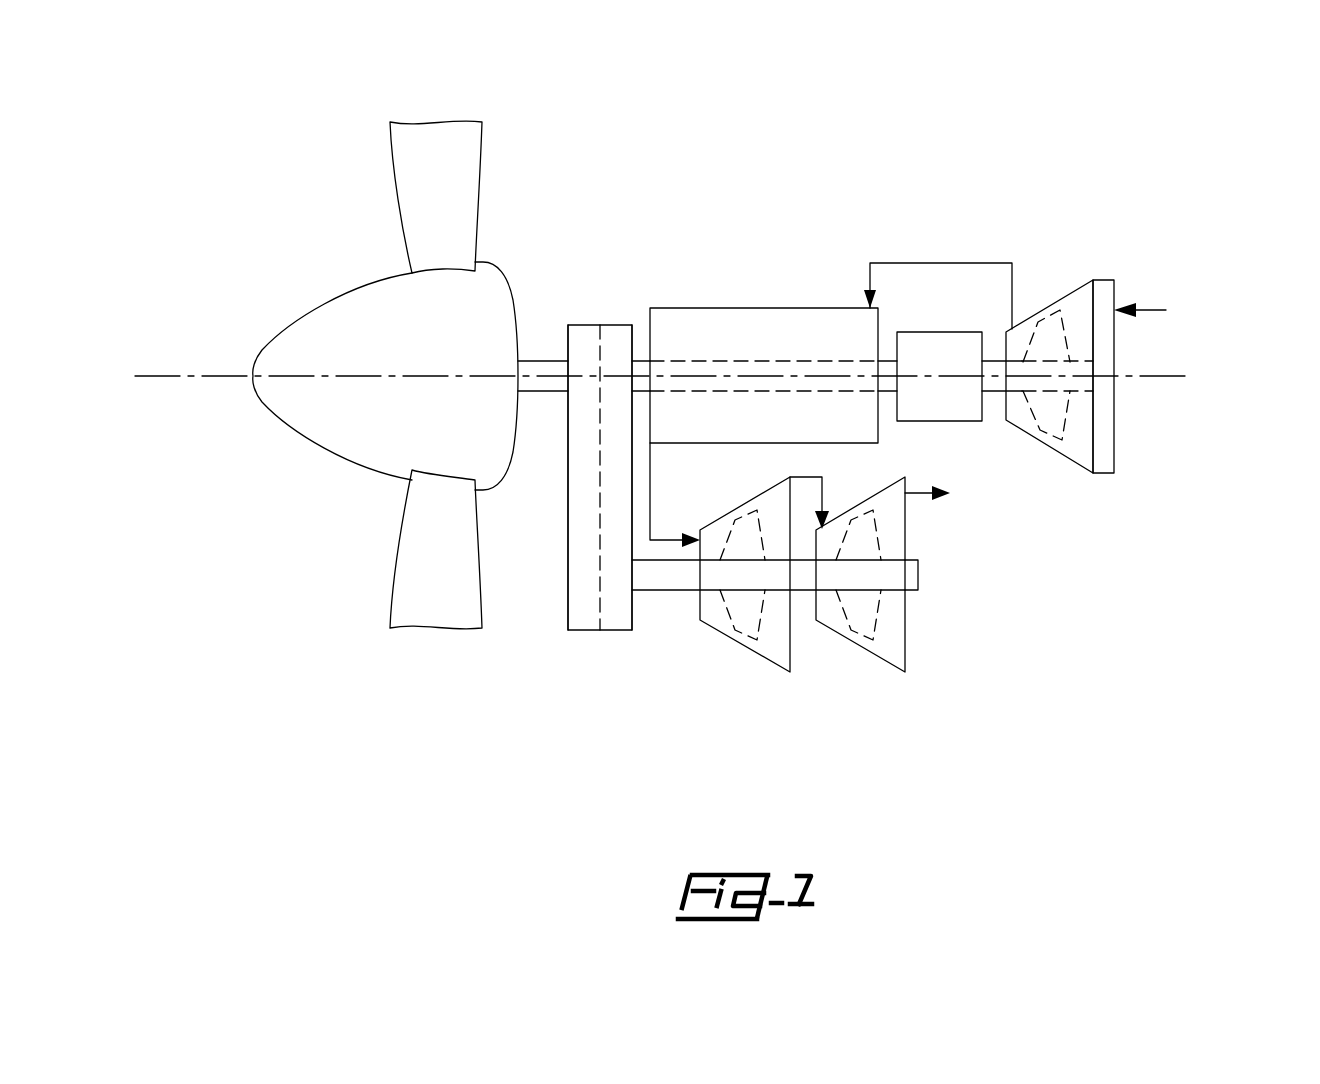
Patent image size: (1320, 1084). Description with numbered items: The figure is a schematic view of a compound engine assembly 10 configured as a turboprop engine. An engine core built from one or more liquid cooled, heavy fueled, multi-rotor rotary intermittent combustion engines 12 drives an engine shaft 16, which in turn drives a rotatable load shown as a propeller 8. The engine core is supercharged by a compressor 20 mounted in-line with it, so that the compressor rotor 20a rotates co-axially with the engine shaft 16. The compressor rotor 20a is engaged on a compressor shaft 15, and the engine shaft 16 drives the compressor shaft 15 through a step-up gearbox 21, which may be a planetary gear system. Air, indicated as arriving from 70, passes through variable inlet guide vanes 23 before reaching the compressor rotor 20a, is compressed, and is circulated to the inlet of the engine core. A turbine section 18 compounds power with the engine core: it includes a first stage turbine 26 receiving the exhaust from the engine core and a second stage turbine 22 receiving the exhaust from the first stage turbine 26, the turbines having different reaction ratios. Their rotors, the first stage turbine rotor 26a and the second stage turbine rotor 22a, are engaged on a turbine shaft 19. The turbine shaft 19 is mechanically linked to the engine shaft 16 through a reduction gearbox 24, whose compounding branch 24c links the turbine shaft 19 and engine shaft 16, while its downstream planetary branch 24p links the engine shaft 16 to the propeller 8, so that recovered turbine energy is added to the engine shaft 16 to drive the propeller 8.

The propeller 8 is at (462, 165).
The compound engine assembly 10 is at (891, 200).
The internal combustion engine 12 is at (765, 330).
The compressor shaft 15 is at (992, 385).
The engine shaft 16 is at (693, 360).
The turbine section 18 is at (893, 695).
The turbine shaft 19 is at (663, 580).
The compressor 20 is at (1074, 275).
The compressor rotor 20a is at (1049, 412).
The step-up gearbox 21 is at (947, 332).
The second stage turbine 22 is at (918, 682).
The second stage turbine rotor 22a is at (853, 612).
The variable inlet guide vanes 23 is at (1102, 287).
The reduction gearbox 24 is at (587, 325).
The downstream planetary branch 24p is at (582, 612).
The compounding branch 24c is at (618, 615).
The first stage turbine 26 is at (712, 641).
The first stage turbine rotor 26a is at (748, 613).
The air source 70 is at (1198, 308).